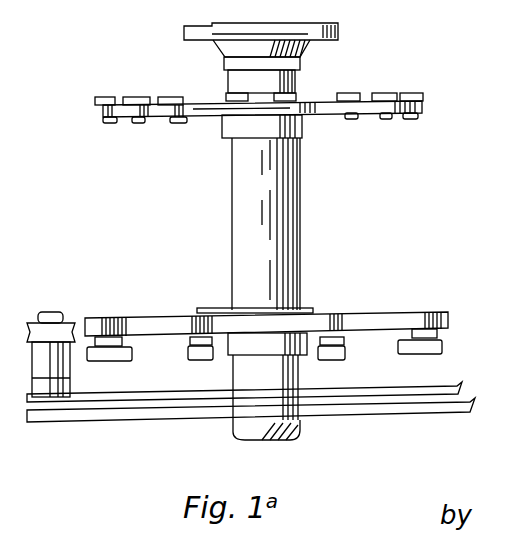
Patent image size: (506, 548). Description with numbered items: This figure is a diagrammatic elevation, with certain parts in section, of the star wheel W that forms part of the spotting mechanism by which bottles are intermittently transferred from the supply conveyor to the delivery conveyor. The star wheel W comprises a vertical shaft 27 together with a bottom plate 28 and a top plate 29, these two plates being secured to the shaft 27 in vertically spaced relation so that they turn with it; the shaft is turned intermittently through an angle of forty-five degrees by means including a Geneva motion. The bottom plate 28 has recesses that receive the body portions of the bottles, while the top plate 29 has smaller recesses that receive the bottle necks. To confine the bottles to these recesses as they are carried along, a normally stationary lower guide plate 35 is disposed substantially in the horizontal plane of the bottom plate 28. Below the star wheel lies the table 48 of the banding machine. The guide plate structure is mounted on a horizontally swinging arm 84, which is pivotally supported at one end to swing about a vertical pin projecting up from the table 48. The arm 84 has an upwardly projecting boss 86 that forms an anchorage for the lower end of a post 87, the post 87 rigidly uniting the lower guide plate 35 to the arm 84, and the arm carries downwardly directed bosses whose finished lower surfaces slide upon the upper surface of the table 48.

The vertical shaft 27 is at (287, 233).
The bottom plate 28 is at (310, 318).
The top plate 29 is at (190, 114).
The lower guide plate 35 is at (73, 330).
The table 48 is at (397, 410).
The horizontally swinging arm 84 is at (177, 394).
The upwardly projecting boss 86 is at (55, 388).
The post 87 is at (70, 372).
The star wheel W is at (432, 83).